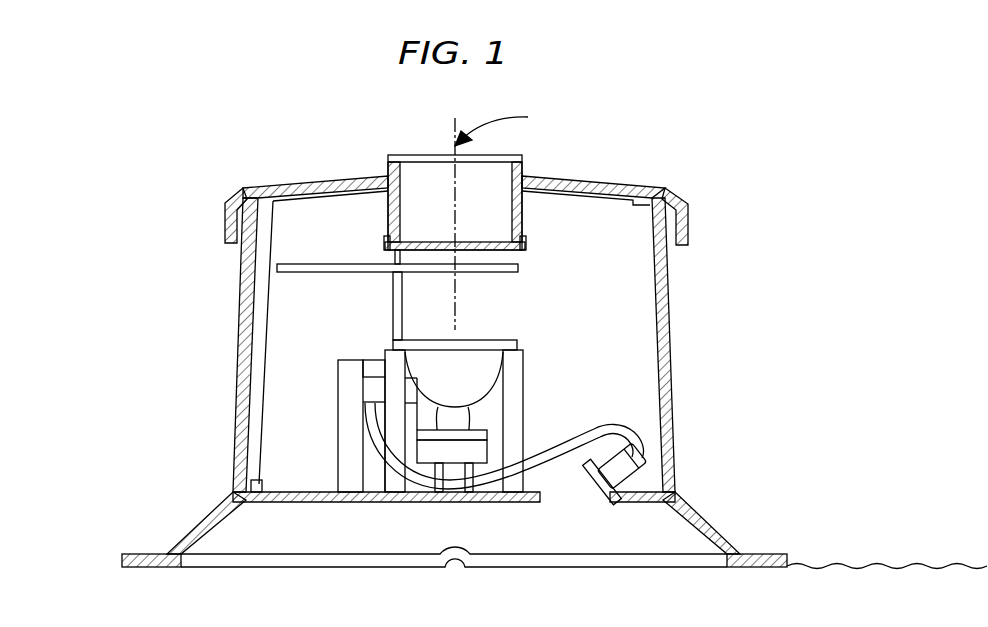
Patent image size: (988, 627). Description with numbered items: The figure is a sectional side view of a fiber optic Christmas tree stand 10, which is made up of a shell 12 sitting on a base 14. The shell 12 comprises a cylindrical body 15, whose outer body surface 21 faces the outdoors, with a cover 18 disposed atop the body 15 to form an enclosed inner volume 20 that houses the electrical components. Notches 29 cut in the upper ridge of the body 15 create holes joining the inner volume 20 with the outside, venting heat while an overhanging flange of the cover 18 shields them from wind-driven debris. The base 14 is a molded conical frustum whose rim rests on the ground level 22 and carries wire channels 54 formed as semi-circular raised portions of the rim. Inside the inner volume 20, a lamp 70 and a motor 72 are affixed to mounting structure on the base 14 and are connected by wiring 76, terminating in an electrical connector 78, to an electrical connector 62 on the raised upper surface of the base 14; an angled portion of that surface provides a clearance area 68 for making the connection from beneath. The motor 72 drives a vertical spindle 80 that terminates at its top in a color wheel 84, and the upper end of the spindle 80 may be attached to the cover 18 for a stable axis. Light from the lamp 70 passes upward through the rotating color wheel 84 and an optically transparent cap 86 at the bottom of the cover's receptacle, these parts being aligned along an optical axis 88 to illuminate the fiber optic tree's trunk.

The fiber optic Christmas tree stand 10 is at (63, 155).
The shell 12 is at (118, 155).
The base 14 is at (118, 497).
The cylindrical body 15 is at (668, 318).
The cover 18 is at (527, 173).
The enclosed inner volume 20 is at (597, 293).
The outer body surface 21 is at (672, 370).
The ground level 22 is at (845, 565).
The notches 29 is at (240, 196).
The wire channels 54 is at (453, 565).
The electrical connector 62 is at (607, 500).
The clearance area 68 is at (580, 488).
The lamp 70 is at (492, 383).
The motor 72 is at (376, 360).
The wiring 76 is at (665, 418).
The electrical connector 78 is at (624, 465).
The spindle 80 is at (392, 305).
The color wheel 84 is at (346, 264).
The optically transparent cap 86 is at (527, 243).
The optical axis 88 is at (496, 214).